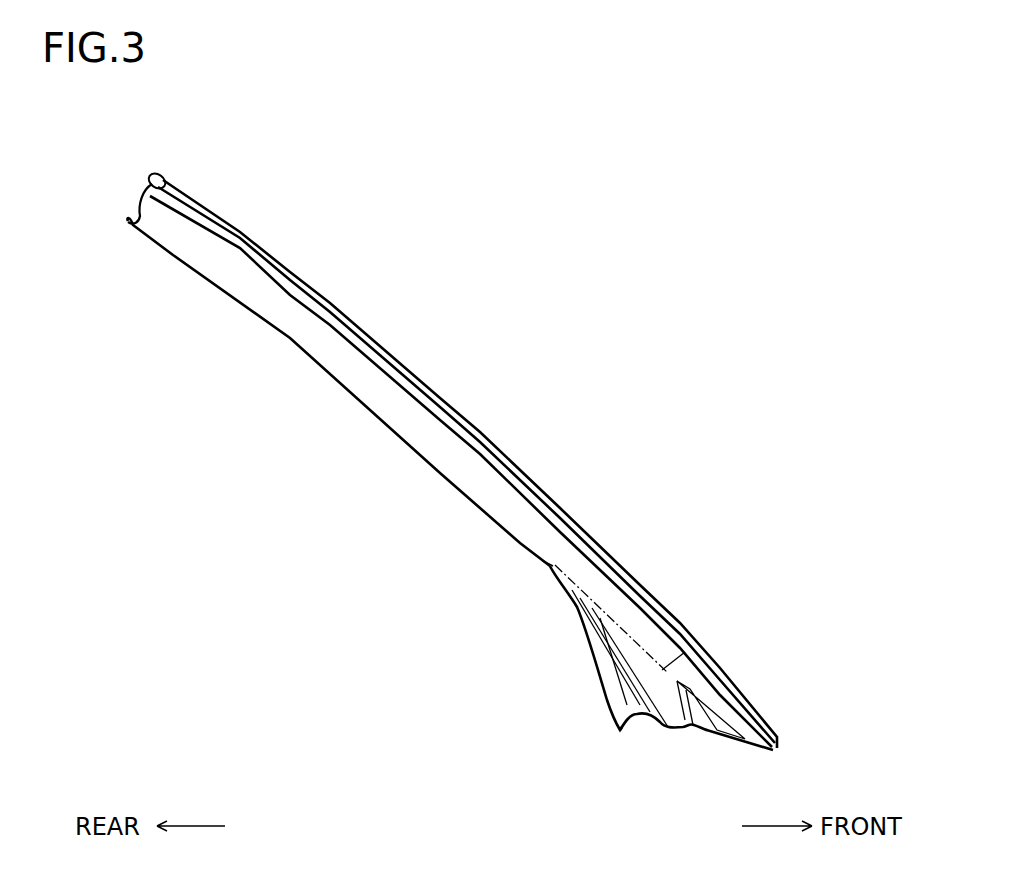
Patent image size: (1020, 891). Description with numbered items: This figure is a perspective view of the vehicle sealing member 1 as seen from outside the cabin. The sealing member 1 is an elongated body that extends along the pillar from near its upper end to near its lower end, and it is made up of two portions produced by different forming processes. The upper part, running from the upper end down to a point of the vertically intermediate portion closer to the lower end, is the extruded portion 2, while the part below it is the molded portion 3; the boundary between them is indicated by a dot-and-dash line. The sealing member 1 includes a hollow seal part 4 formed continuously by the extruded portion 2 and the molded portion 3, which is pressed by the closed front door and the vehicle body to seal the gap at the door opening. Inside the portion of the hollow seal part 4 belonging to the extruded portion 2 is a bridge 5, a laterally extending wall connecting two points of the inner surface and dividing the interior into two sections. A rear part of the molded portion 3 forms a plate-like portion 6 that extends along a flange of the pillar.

The sealing member 1 is at (402, 363).
The extruded portion 2 is at (525, 573).
The molded portion 3 is at (525, 573).
The hollow seal part 4 is at (141, 200).
The bridge 5 is at (153, 175).
The plate-like portion 6 is at (635, 715).